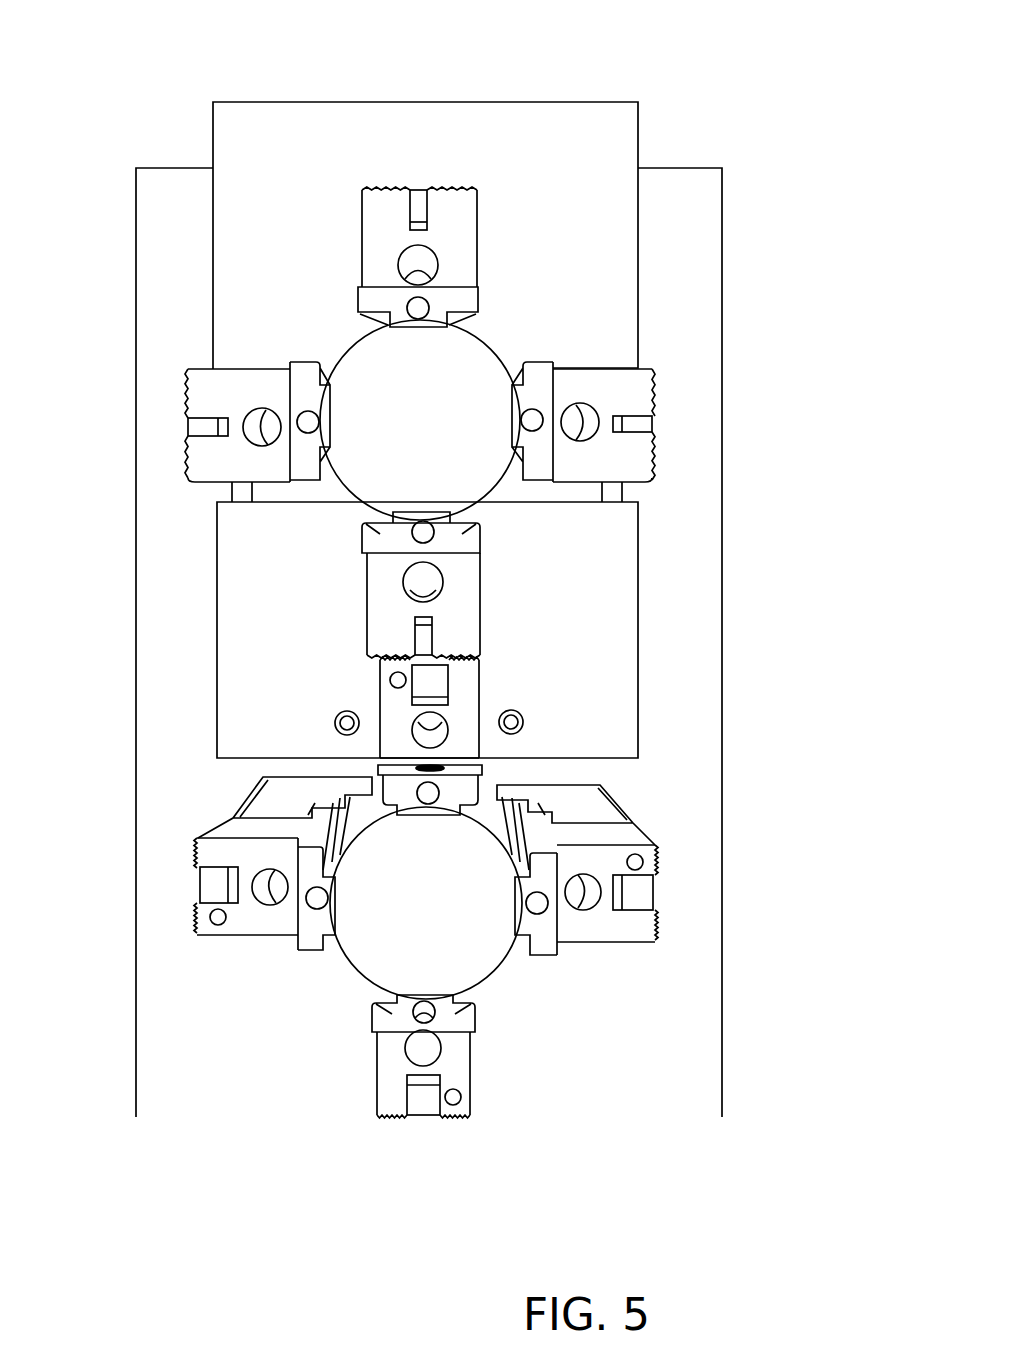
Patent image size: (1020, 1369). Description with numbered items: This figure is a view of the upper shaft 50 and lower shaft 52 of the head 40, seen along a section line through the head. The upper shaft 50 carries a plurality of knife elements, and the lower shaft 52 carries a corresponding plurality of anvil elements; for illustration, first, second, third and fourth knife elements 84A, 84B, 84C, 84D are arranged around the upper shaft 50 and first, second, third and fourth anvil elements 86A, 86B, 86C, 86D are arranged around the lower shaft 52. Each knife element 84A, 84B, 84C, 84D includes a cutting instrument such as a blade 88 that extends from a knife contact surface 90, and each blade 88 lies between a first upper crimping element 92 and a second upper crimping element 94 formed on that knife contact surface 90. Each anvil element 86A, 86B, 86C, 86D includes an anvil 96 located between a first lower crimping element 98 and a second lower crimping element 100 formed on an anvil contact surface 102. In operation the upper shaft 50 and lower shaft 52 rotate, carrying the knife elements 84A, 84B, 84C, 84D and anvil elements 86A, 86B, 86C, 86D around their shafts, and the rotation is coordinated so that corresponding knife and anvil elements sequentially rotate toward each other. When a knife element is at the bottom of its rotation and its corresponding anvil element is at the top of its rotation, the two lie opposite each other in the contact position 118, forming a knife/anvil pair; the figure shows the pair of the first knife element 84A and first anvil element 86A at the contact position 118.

The tool assembly 40 is at (198, 68).
The upper shaft 50 is at (438, 440).
The lower shaft 52 is at (445, 935).
The first knife element 84A is at (392, 562).
The second knife element 84B is at (250, 388).
The third knife element 84C is at (460, 262).
The fourth knife element 84D is at (583, 457).
The first anvil element 86A is at (392, 720).
The second anvil element 86B is at (277, 921).
The third anvil element 86C is at (460, 1059).
The fourth anvil element 86D is at (597, 860).
The blade 88 is at (420, 190).
The knife contact surface 90 is at (482, 196).
The first upper crimping element 92 is at (376, 187).
The second upper crimping element 94 is at (457, 187).
The anvil 96 is at (480, 707).
The first lower crimping element 98 is at (467, 672).
The second lower crimping element 100 is at (388, 672).
The anvil contact surface 102 is at (378, 662).
The contact position 118 is at (625, 641).